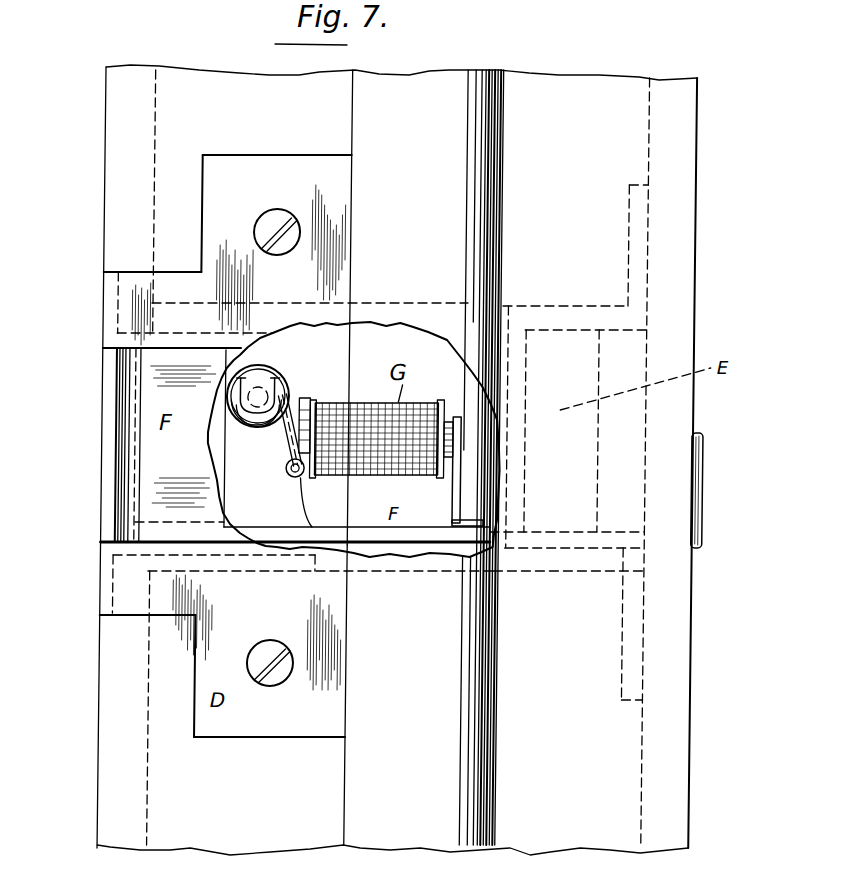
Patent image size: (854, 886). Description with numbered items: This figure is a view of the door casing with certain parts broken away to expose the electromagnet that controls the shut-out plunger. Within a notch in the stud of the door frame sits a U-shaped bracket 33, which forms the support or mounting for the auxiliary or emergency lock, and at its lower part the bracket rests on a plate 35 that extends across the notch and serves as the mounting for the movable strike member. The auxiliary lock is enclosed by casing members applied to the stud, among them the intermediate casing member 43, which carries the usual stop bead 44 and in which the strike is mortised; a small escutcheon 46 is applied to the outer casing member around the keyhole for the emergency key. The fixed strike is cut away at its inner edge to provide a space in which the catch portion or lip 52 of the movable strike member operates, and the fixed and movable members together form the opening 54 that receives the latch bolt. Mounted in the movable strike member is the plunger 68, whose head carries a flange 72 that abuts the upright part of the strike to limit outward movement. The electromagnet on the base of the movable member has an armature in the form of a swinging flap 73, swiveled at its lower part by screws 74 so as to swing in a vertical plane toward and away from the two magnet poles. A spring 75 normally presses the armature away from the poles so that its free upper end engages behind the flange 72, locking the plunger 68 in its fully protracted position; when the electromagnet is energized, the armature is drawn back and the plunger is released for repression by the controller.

The U-shaped bracket 33 is at (636, 260).
The plate 35 is at (574, 560).
The intermediate casing member 43 is at (601, 627).
The stop bead 44 is at (378, 695).
The escutcheon 46 is at (709, 535).
The catch portion or lip 52 is at (217, 381).
The opening 54 is at (231, 367).
The plunger 68 is at (266, 383).
The flange 72 is at (253, 422).
The swinging flap armature 73 is at (337, 384).
The screws 74 is at (306, 478).
The spring 75 is at (318, 392).